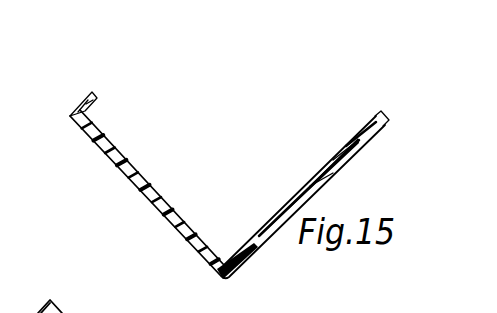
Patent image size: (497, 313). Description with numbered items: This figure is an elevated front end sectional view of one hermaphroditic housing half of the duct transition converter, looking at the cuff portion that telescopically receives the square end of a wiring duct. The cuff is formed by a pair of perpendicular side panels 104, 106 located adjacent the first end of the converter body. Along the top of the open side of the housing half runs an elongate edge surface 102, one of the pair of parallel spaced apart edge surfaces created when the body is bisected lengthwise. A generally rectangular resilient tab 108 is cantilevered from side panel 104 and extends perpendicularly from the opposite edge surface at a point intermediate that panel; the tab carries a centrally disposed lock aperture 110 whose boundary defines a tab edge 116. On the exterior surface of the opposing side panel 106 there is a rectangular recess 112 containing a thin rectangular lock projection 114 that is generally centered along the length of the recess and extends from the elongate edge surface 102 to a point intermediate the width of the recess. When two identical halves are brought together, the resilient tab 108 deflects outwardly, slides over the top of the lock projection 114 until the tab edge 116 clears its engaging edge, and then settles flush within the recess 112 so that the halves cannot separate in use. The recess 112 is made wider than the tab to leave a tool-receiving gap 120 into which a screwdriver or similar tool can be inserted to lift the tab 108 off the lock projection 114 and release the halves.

The elongate edge surface 102 is at (384, 115).
The side panel 104 is at (132, 187).
The side panel 106 is at (331, 174).
The resilient tab 108 is at (93, 101).
The lock aperture 110 is at (77, 107).
The rectangular recess 112 is at (370, 131).
The lock projection 114 is at (380, 125).
The tab edge 116 is at (86, 98).
The tool-receiving gap 120 is at (369, 137).